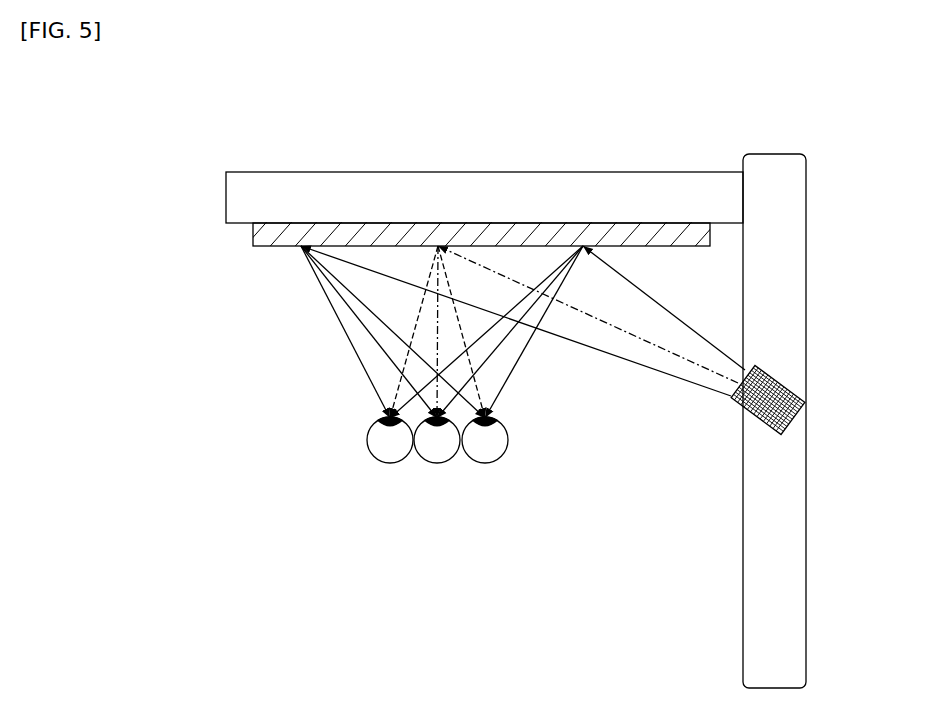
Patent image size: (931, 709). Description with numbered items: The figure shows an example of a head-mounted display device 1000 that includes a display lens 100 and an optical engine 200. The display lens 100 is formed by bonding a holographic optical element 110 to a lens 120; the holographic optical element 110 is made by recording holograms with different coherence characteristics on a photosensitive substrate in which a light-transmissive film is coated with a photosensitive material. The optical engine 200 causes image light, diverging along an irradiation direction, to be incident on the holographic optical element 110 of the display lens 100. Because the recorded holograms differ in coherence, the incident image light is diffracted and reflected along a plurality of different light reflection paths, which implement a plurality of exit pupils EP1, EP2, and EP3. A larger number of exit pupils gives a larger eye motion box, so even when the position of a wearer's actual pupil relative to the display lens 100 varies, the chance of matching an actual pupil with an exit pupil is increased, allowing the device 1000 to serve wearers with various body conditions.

The head-mounted display device 1000 is at (163, 108).
The display lens 100 is at (133, 173).
The lens 120 is at (226, 185).
The holographic optical element 110 is at (253, 243).
The optical engine 200 is at (801, 412).
The exit pupil EP1 is at (390, 455).
The exit pupil EP2 is at (437, 455).
The exit pupil EP3 is at (485, 455).